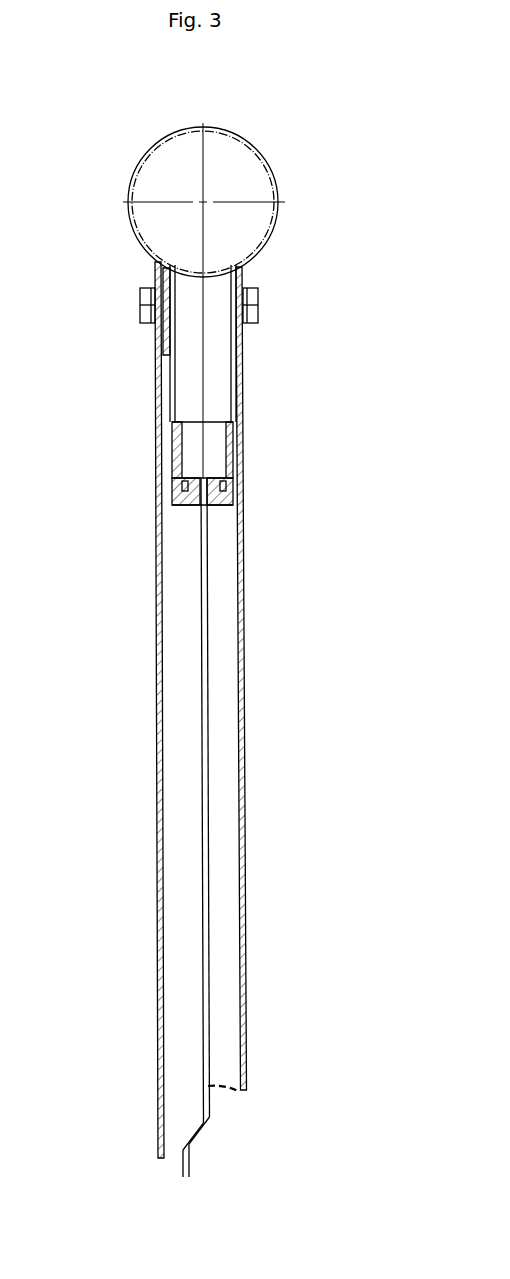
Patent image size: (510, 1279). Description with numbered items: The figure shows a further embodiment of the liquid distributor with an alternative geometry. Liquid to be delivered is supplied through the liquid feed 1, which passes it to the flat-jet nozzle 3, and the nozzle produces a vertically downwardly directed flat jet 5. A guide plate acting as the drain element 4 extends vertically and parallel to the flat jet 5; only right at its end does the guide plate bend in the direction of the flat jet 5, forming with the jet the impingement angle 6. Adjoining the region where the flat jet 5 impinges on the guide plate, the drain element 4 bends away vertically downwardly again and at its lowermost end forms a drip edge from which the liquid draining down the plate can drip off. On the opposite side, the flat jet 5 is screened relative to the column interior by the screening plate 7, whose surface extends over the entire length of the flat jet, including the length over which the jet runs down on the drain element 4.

The liquid feed 1 is at (128, 176).
The flat-jet nozzle 3 is at (213, 490).
The drain element 4 is at (219, 1117).
The flat jet 5 is at (207, 795).
The impingement angle 6 is at (217, 1102).
The screening plate 7 is at (154, 687).